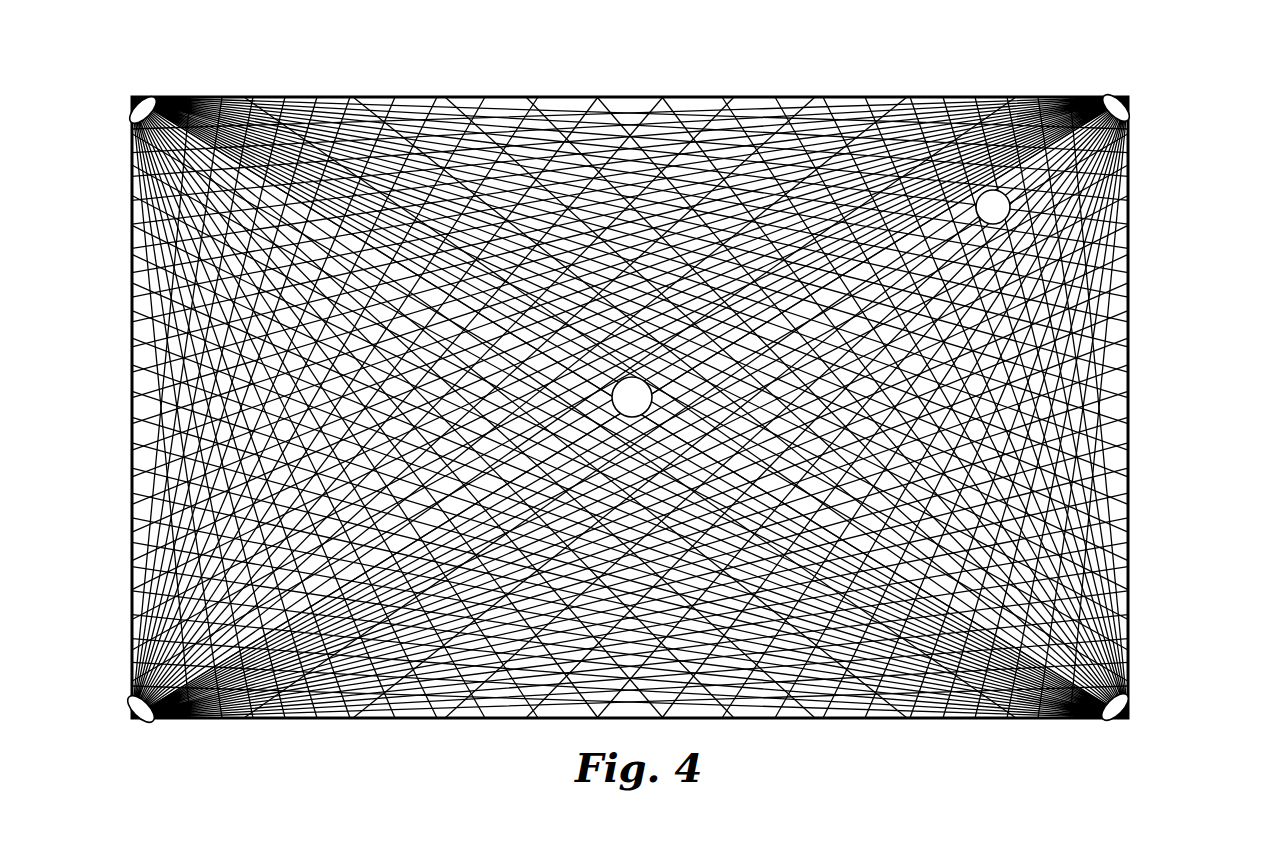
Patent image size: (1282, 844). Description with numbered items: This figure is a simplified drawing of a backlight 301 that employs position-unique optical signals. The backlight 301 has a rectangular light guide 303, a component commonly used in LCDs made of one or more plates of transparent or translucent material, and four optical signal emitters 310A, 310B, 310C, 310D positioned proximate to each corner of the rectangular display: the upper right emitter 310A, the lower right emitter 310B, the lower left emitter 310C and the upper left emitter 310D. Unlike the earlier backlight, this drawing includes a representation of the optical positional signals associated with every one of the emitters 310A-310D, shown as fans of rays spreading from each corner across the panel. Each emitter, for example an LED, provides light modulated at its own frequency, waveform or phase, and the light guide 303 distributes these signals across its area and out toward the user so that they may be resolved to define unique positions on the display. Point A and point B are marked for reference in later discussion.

The backlight 301 is at (1189, 55).
The light guide 303 is at (875, 720).
The upper right emitter 310A is at (1113, 102).
The lower right emitter 310B is at (1116, 716).
The lower left emitter 310C is at (144, 716).
The upper left emitter 310D is at (147, 102).